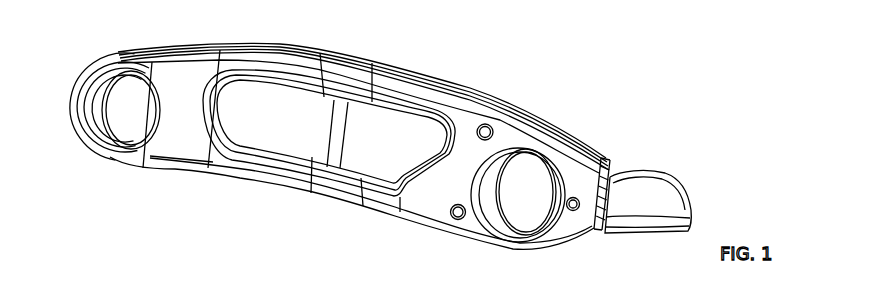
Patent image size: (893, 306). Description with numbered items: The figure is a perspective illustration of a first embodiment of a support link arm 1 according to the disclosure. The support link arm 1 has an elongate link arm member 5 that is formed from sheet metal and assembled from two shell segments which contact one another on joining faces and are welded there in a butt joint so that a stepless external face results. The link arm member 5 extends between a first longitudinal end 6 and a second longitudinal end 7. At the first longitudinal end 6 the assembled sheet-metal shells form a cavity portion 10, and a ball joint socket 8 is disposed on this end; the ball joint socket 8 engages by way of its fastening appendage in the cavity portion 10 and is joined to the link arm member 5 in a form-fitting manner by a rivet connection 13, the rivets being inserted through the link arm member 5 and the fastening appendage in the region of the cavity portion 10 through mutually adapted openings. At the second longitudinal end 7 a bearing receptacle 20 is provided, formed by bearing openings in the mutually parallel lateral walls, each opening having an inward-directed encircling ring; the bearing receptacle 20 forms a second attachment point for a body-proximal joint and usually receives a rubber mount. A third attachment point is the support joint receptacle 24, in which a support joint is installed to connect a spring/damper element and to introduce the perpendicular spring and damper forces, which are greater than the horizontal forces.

The support link arm 1 is at (357, 150).
The link arm member 5 is at (466, 84).
The first longitudinal end 6 is at (598, 130).
The second longitudinal end 7 is at (113, 168).
The ball joint socket 8 is at (676, 178).
The cavity portion 10 is at (607, 162).
The rivet connection 13 is at (460, 220).
The bearing receptacle 20 is at (90, 137).
The support joint receptacle 24 is at (501, 231).